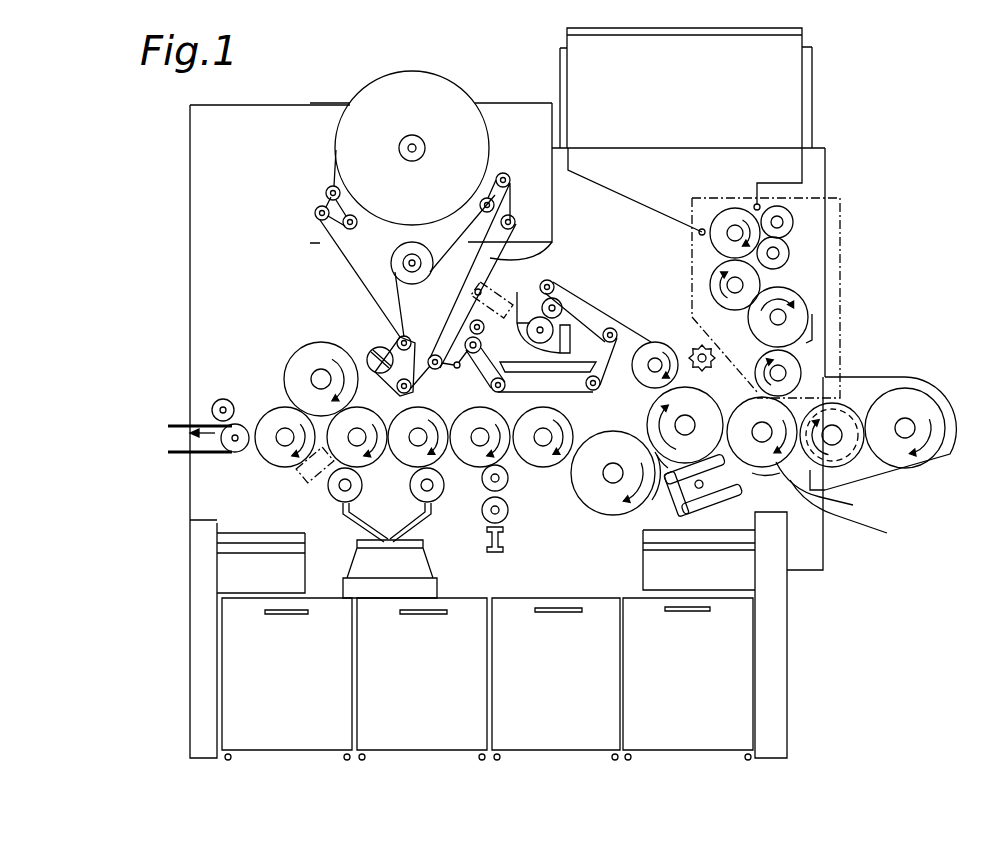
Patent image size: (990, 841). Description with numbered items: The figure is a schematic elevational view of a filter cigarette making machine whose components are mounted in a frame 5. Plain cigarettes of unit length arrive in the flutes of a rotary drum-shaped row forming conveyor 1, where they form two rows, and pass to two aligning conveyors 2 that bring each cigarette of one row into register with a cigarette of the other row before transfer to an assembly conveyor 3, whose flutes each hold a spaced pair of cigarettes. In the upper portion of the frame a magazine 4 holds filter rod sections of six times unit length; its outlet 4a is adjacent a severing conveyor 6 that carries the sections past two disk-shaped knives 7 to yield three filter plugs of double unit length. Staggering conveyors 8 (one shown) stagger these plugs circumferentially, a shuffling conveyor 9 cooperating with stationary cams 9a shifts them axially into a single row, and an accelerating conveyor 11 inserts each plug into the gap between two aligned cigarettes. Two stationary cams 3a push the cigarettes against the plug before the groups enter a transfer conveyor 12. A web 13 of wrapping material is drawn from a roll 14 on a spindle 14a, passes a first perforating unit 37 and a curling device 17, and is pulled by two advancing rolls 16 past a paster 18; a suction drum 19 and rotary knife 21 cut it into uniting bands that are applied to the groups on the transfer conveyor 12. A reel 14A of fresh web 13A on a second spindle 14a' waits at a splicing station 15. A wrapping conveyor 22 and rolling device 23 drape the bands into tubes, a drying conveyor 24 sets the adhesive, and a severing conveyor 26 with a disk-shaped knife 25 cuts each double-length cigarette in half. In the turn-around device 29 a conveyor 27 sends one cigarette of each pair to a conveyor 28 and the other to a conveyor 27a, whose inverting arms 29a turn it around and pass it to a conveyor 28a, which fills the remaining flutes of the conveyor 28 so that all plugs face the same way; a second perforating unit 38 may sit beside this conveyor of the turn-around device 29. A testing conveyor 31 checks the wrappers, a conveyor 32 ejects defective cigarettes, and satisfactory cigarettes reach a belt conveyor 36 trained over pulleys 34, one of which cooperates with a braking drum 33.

The row forming conveyor 1 is at (918, 415).
The aligning conveyors 2 is at (840, 420).
The assembly conveyor 3 is at (803, 459).
The stationary cams 3a is at (850, 512).
The magazine 4 is at (780, 75).
The outlet of the magazine 4a is at (700, 194).
The frame 5 is at (183, 560).
The severing conveyor 6 is at (735, 215).
The disk-shaped knives 7 is at (786, 250).
The staggering conveyors 8 is at (752, 283).
The shuffling conveyor 9 is at (800, 308).
The stationary cams 9a is at (814, 322).
The accelerating conveyor 11 is at (790, 367).
The transfer conveyor 12 is at (707, 447).
The web 13 is at (552, 242).
The fresh web 13A is at (332, 163).
The roll 14 is at (420, 277).
The reel 14A is at (408, 80).
The spindle 14a is at (432, 225).
The second spindle 14a' is at (437, 142).
The splicing station 15 is at (385, 333).
The advancing rolls 16 is at (472, 354).
The curling device 17 is at (455, 367).
The paster 18 is at (541, 302).
The suction drum 19 is at (648, 332).
The rotary knife 21 is at (695, 348).
The wrapping conveyor 22 is at (600, 505).
The rolling device 23 is at (665, 505).
The drying conveyor 24 is at (540, 463).
The disk-shaped knife 25 is at (490, 553).
The severing conveyor 26 is at (510, 470).
The conveyor 27 is at (433, 498).
The conveyor 27a is at (435, 505).
The conveyor 28 is at (372, 462).
The conveyor 28a is at (358, 494).
The turn-around device 29 is at (335, 519).
The inverting arms 29a is at (370, 524).
The testing conveyor 31 is at (316, 362).
The conveyor 32 is at (275, 408).
The braking drum 33 is at (237, 380).
The pulleys 34 is at (240, 448).
The belt conveyor 36 is at (170, 425).
The first perforating unit 37 is at (483, 284).
The second perforating unit 38 is at (311, 479).